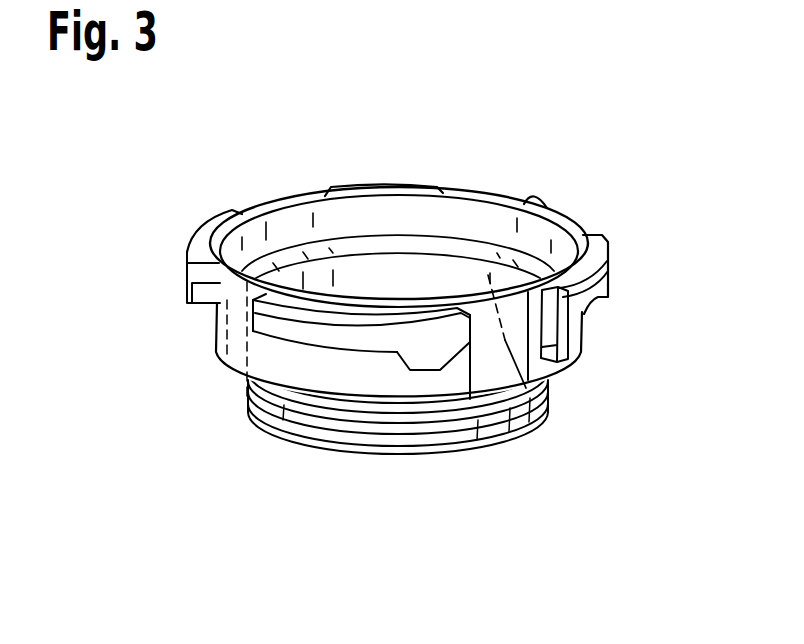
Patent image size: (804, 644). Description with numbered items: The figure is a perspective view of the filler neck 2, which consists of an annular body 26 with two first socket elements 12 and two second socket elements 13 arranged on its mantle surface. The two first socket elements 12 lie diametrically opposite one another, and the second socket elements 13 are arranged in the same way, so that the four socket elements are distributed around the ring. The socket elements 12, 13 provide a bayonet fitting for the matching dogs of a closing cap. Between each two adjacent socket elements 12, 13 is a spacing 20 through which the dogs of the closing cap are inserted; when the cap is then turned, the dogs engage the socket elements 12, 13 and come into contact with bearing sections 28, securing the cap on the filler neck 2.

The filler neck 2 is at (504, 160).
The first socket element 12 is at (207, 230).
The second socket element 13 is at (527, 194).
The spacing 20 is at (237, 300).
The annular body 26 is at (432, 393).
The bearing section 28 is at (335, 353).